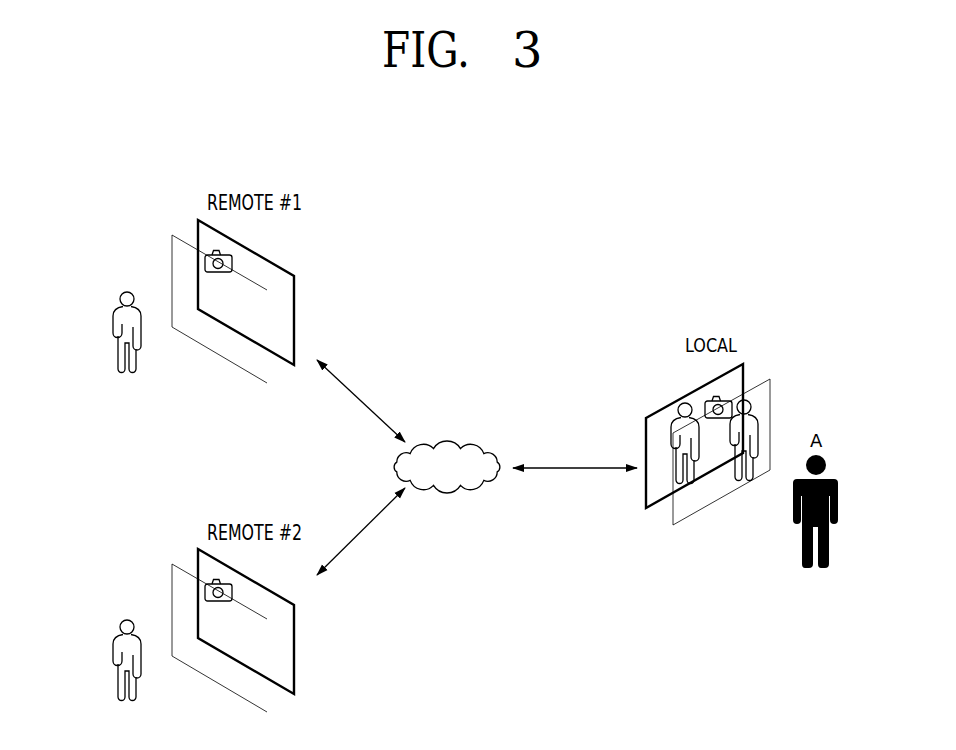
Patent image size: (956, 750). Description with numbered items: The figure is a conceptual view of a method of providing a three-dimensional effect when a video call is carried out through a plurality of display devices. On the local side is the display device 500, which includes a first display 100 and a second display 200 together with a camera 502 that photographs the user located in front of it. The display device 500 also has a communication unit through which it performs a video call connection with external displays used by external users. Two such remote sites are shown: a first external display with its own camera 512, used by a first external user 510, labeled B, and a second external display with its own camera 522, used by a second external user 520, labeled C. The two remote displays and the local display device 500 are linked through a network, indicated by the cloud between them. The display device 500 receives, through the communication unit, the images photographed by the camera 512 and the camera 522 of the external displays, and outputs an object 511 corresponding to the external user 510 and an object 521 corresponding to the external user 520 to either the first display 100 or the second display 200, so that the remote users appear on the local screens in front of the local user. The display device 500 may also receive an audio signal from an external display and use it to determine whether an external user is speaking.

The first display 100 is at (657, 410).
The second display 200 is at (770, 418).
The display device 500 is at (714, 430).
The camera 502 is at (712, 400).
The external user 510 is at (108, 298).
The object 511 is at (672, 470).
The camera of the external display 512 is at (215, 250).
The external user 520 is at (98, 627).
The object 521 is at (733, 481).
The camera of the external display 522 is at (215, 579).